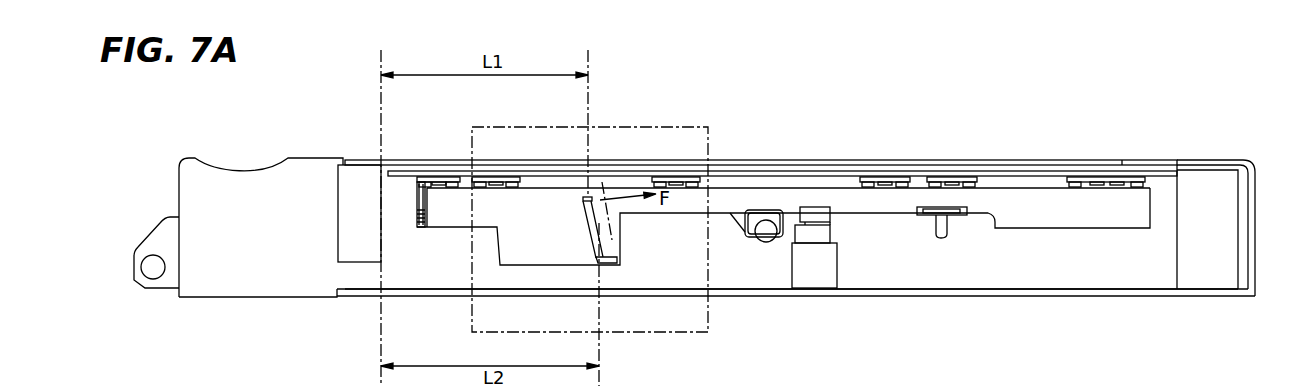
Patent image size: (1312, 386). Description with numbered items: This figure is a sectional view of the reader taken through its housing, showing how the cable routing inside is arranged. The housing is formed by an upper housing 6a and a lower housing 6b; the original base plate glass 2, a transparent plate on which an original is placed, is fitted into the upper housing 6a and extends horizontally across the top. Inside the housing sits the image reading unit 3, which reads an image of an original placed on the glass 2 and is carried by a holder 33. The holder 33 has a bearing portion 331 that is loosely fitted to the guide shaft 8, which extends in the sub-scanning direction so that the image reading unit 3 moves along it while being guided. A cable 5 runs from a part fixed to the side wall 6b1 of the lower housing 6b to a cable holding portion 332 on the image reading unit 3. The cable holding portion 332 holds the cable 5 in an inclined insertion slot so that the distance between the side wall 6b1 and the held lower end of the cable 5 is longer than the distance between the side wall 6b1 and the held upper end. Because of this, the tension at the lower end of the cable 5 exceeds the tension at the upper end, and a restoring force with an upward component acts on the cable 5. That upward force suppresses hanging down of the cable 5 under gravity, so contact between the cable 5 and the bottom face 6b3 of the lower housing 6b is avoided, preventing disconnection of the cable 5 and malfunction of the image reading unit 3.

The original base plate glass 2 is at (1163, 178).
The image reading unit 3 is at (783, 278).
The cable 5 is at (607, 243).
The guide shaft 8 is at (768, 240).
The holder 33 is at (1112, 210).
The bearing portion 331 is at (752, 237).
The cable holding portion 332 is at (585, 200).
The upper housing 6a is at (1230, 159).
The lower housing 6b is at (1197, 297).
The side wall 6b1 is at (381, 228).
The bottom face 6b3 is at (1015, 289).